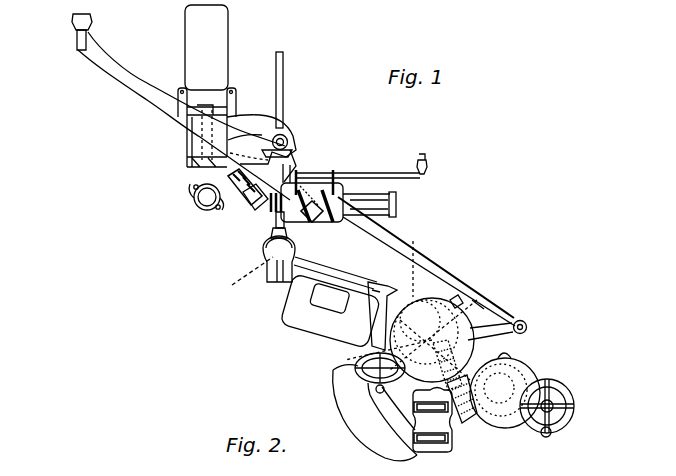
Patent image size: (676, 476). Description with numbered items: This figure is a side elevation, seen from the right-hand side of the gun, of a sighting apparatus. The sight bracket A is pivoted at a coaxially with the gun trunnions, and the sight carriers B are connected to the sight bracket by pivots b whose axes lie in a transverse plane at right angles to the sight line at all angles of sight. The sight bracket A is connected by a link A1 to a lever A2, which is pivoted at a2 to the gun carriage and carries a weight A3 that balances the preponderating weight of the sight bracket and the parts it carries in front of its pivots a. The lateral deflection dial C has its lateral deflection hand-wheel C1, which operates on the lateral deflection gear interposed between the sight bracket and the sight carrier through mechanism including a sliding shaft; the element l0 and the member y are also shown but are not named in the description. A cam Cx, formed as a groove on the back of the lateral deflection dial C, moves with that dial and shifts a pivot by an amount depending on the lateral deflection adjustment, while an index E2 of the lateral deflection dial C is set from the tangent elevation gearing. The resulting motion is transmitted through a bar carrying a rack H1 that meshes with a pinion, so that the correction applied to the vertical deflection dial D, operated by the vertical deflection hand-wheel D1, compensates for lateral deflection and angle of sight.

The sight bracket A is at (208, 45).
The pivot b is at (197, 137).
The pivot a is at (193, 197).
The sight carrier B is at (288, 149).
The rod l0 is at (284, 97).
The link A1 is at (363, 230).
The cam Cx is at (422, 262).
The lateral deflection dial C is at (433, 297).
The index E2 is at (455, 295).
The pivot a2 is at (478, 305).
The pivot y is at (519, 320).
The lever A2 is at (513, 337).
The weight A3 is at (342, 380).
The lateral deflection hand-wheel C1 is at (338, 391).
The rack H1 is at (478, 423).
The vertical deflection dial D is at (513, 432).
The vertical deflection hand-wheel D1 is at (575, 404).